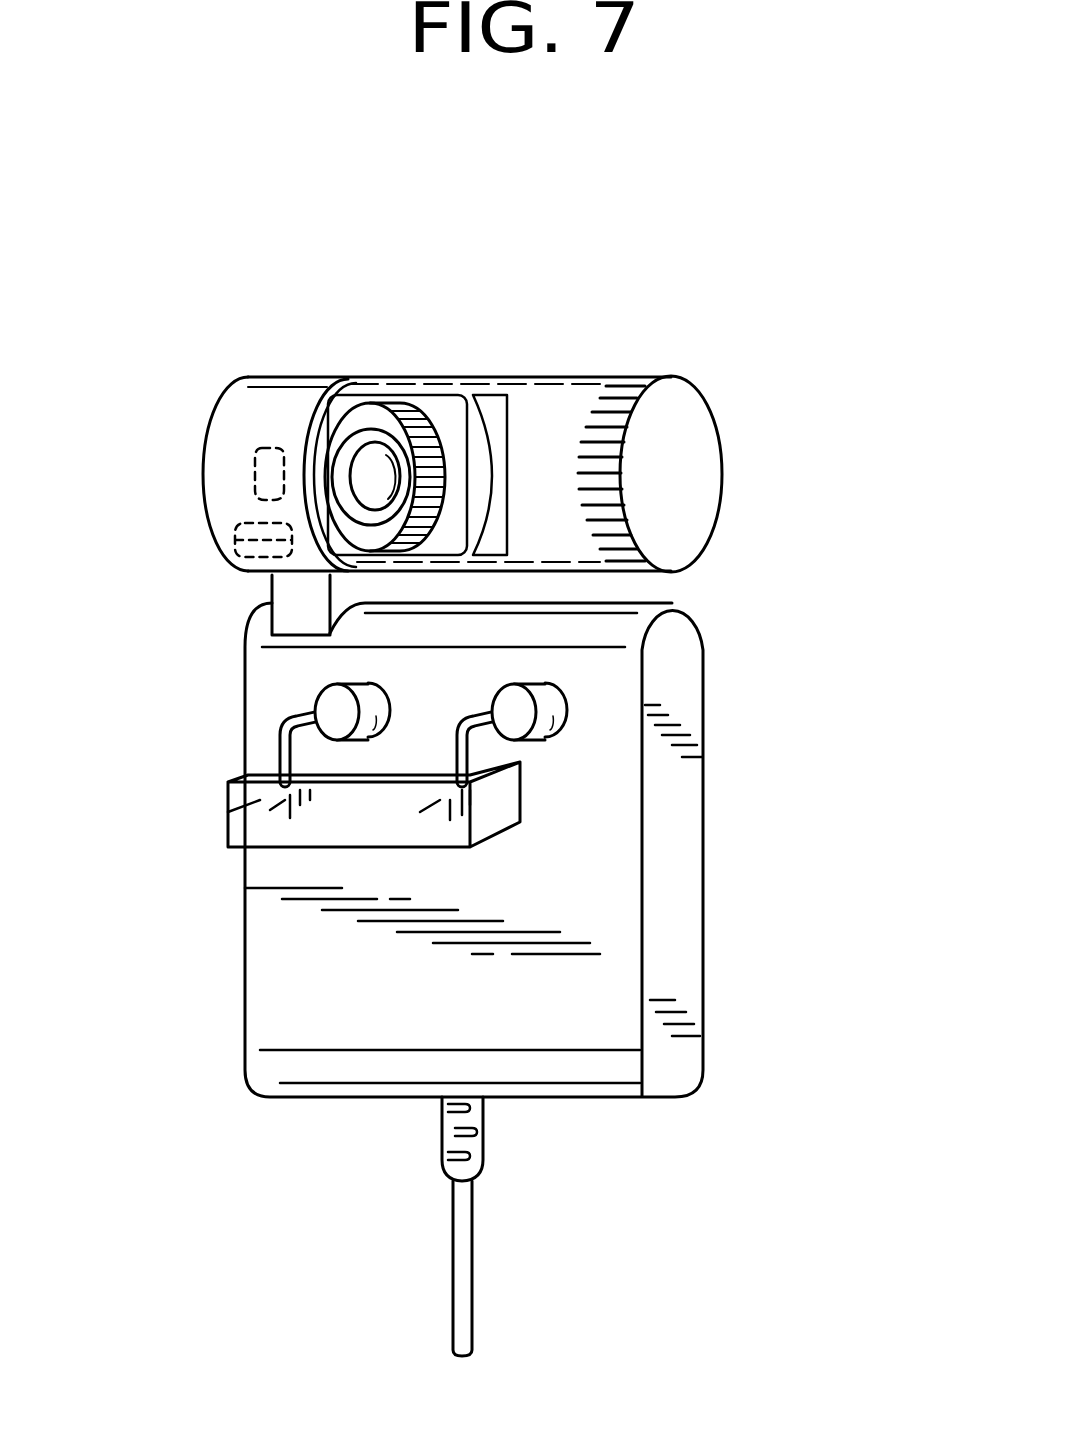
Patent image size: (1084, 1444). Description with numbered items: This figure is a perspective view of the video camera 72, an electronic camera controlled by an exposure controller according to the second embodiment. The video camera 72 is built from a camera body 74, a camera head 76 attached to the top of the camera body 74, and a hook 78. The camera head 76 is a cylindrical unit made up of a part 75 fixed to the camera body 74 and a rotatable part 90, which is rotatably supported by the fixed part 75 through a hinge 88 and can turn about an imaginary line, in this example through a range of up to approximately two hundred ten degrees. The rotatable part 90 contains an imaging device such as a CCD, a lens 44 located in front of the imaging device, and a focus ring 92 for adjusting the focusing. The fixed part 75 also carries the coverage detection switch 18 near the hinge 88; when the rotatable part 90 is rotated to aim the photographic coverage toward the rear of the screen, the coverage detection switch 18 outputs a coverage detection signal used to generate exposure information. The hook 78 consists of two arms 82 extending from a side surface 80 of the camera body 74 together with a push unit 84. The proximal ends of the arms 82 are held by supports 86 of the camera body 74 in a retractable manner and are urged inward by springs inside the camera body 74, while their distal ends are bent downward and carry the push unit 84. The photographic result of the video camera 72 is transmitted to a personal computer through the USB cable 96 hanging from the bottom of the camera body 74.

The video camera 72 is at (785, 316).
The camera head 76 is at (562, 376).
The fixed part 75 is at (275, 405).
The focus ring 92 is at (363, 415).
The lens 44 is at (373, 467).
The hinge 88 is at (250, 473).
The coverage detection switch 18 is at (245, 522).
The rotatable part 90 is at (693, 458).
The camera body 74 is at (703, 883).
The side surface 80 is at (600, 977).
The hook 78 is at (270, 733).
The supports 86 is at (560, 690).
The arms 82 is at (470, 748).
The push unit 84 is at (258, 812).
The USB cable 96 is at (473, 1258).